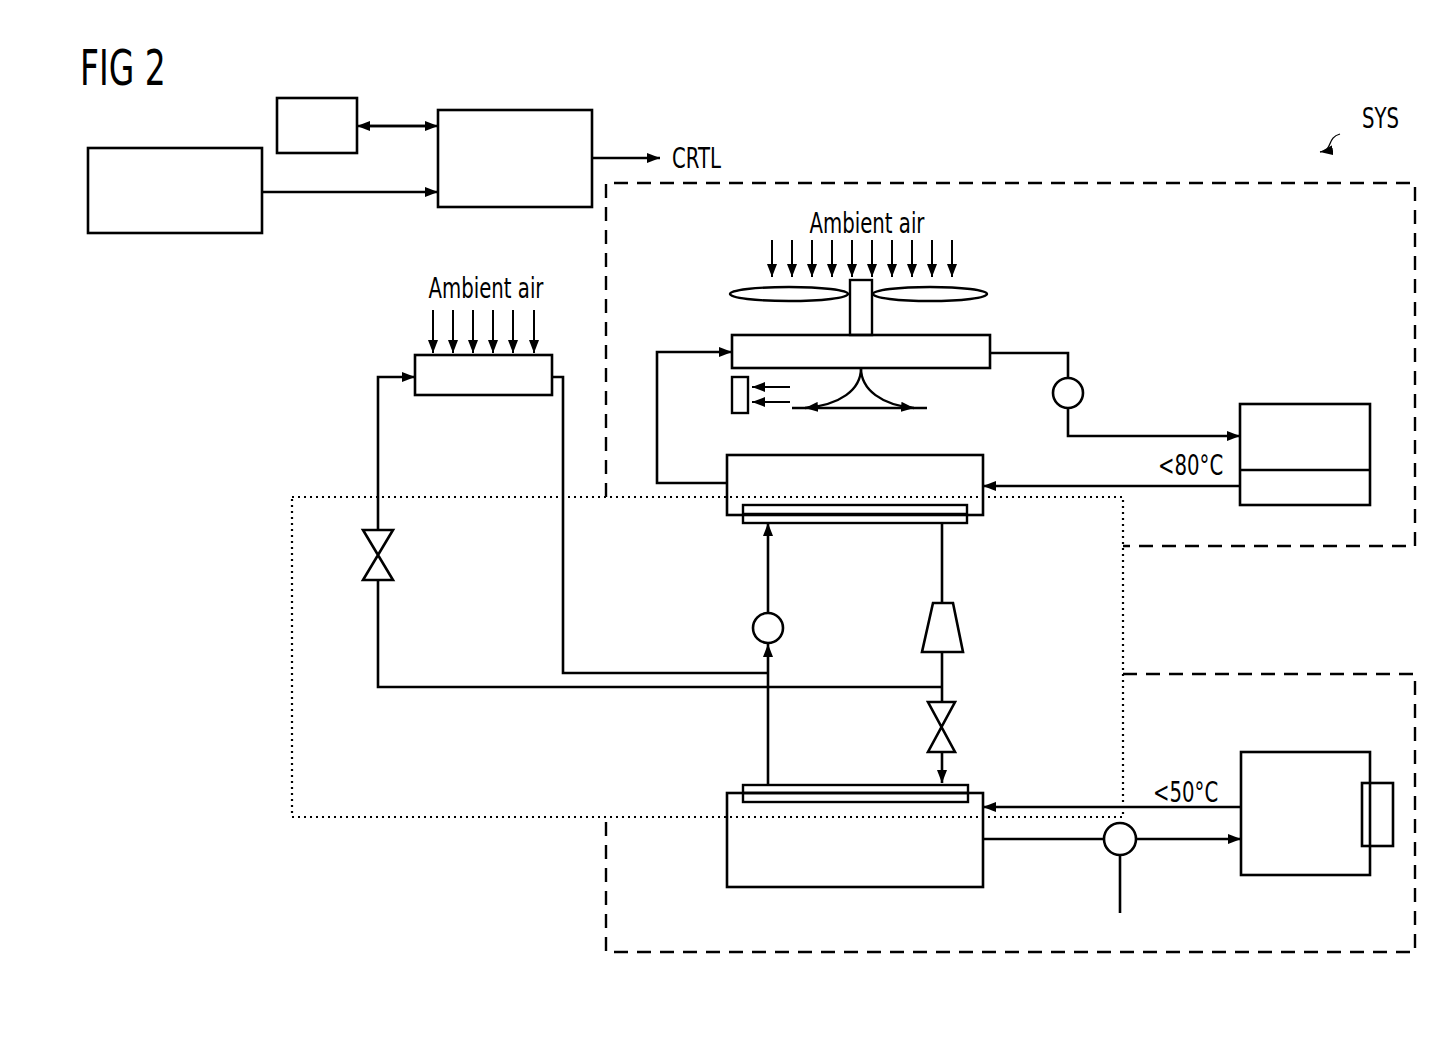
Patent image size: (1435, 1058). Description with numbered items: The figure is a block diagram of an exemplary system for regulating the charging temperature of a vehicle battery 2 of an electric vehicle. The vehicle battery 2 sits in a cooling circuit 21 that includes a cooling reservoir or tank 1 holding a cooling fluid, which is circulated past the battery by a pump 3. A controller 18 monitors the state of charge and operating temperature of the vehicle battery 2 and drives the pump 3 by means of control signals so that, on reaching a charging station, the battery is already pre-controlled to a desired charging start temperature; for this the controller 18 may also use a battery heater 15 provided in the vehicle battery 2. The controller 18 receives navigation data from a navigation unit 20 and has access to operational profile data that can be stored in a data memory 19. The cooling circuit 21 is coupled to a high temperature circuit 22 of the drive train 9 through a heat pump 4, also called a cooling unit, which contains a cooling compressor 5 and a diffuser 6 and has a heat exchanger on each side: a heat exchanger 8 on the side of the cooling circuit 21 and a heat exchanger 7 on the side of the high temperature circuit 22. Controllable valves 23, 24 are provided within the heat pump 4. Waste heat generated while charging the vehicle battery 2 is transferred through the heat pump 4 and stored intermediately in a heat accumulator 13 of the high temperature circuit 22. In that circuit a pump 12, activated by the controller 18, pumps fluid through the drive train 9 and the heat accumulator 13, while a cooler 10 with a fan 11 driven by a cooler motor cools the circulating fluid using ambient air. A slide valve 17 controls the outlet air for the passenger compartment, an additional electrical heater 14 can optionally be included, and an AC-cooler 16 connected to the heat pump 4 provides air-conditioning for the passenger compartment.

The cooling reservoir 1 is at (727, 853).
The vehicle battery 2 is at (1307, 760).
The pump 3 is at (1130, 851).
The heat pump 4 is at (292, 642).
The cooling compressor 5 is at (785, 628).
The diffuser 6 is at (965, 630).
The heat exchanger 7 is at (967, 520).
The heat exchanger 8 is at (743, 786).
The drive train 9 is at (1305, 404).
The cooler 10 is at (993, 337).
The fan 11 is at (962, 291).
The pump 12 is at (1078, 380).
The heat accumulator 13 is at (985, 470).
The additional electrical heater 14 is at (732, 393).
The battery heater 15 is at (1382, 790).
The AC-cooler 16 is at (415, 368).
The slide valve 17 is at (918, 430).
The controller 18 is at (438, 158).
The data memory 19 is at (277, 122).
The navigation unit 20 is at (178, 233).
The cooling circuit 21 is at (1260, 674).
The high temperature circuit 22 is at (1043, 183).
The controllable valve 23 is at (368, 545).
The controllable valve 24 is at (930, 716).